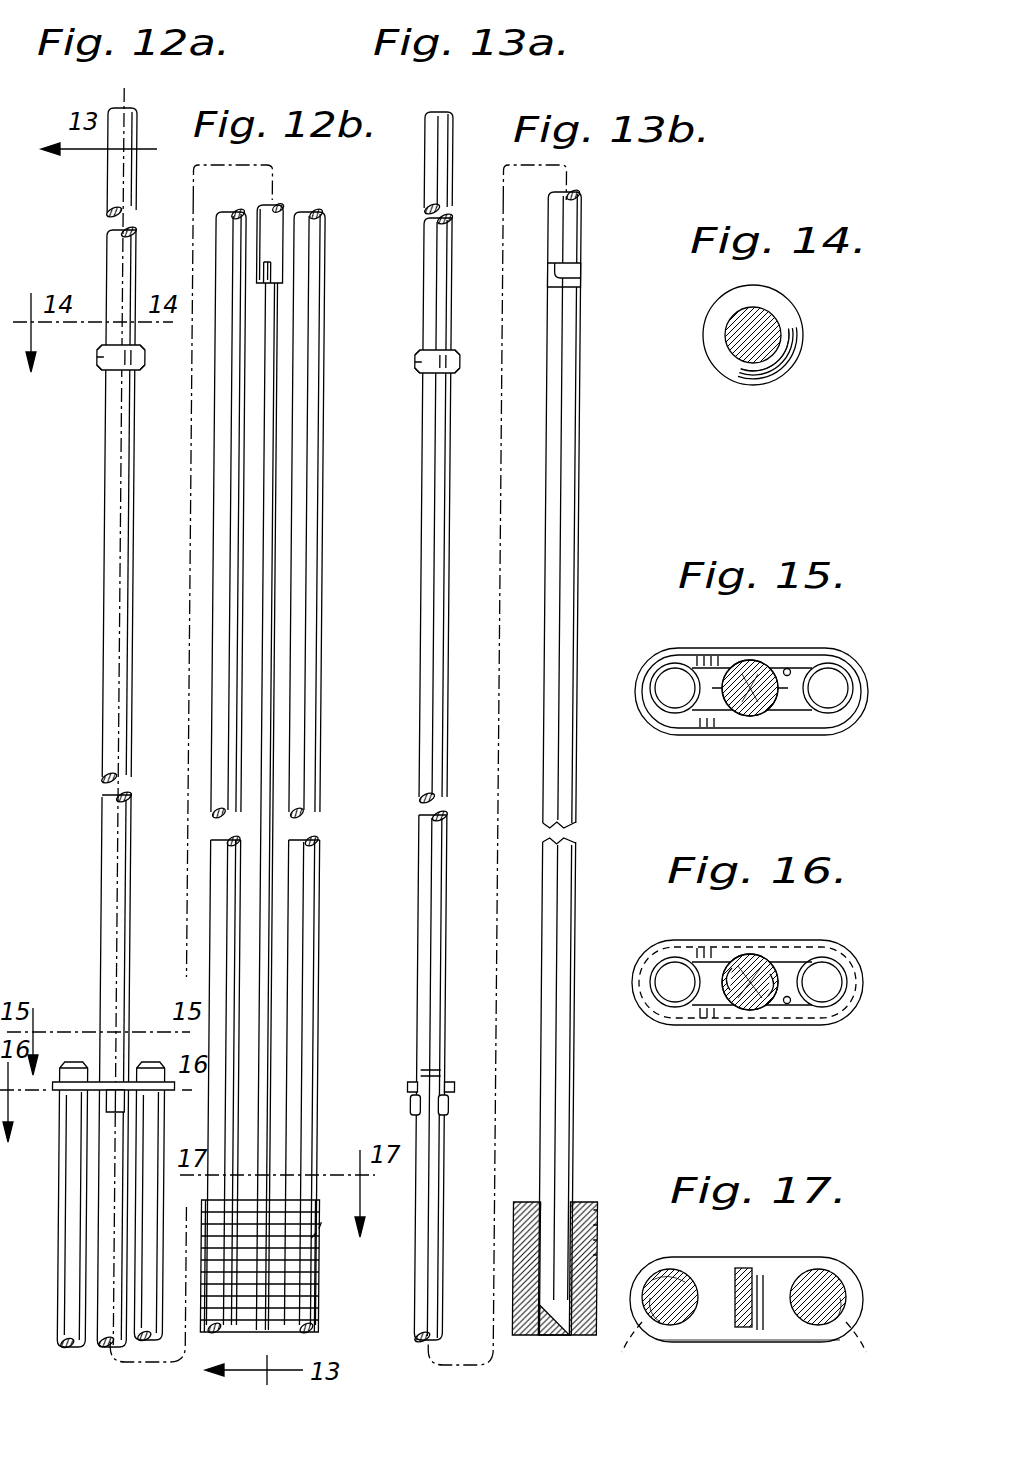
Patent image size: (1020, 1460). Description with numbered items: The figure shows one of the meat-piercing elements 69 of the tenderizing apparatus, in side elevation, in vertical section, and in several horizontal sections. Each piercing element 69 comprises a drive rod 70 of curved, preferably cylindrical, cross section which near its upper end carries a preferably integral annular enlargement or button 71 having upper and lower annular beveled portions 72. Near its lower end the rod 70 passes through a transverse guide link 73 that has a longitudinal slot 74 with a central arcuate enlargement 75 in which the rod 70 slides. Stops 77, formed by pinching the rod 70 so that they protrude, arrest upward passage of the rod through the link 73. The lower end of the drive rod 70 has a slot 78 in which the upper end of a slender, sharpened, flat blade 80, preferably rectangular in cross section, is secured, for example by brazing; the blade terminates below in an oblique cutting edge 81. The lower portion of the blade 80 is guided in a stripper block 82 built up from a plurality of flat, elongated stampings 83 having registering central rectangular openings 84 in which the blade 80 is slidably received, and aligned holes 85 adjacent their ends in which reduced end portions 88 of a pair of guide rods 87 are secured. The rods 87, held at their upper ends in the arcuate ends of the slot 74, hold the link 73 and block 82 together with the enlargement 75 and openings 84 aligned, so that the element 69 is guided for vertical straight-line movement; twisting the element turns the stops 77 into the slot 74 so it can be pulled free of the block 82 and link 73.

In FIG. 12A, the meat-piercing element 69 is at (86, 644).
In FIG. 12A, the drive rod 70 is at (108, 245).
In FIG. 12B, the drive rod 70 is at (279, 206).
In FIG. 13A, the drive rod 70 is at (428, 232).
In FIG. 13B, the drive rod 70 is at (580, 200).
In FIG. 14, the drive rod 70 is at (768, 340).
In FIG. 15, the drive rod 70 is at (748, 664).
In FIG. 16, the drive rod 70 is at (752, 1010).
In FIG. 12A, the annular enlargement or button 71 is at (101, 360).
In FIG. 13A, the annular enlargement or button 71 is at (419, 358).
In FIG. 14, the annular enlargement or button 71 is at (722, 303).
In FIG. 12A, the annular beveled portions 72 is at (141, 372).
In FIG. 13A, the annular beveled portions 72 is at (458, 374).
In FIG. 14, the annular beveled portions 72 is at (728, 365).
In FIG. 12A, the transverse guide link 73 is at (62, 1086).
In FIG. 13A, the transverse guide link 73 is at (410, 1086).
In FIG. 15, the transverse guide link 73 is at (674, 650).
In FIG. 16, the transverse guide link 73 is at (682, 942).
In FIG. 15, the longitudinal slot 74 is at (790, 668).
In FIG. 16, the longitudinal slot 74 is at (792, 1003).
In FIG. 13A, the central arcuate enlargement 75 is at (422, 1076).
In FIG. 15, the central arcuate enlargement 75 is at (780, 706).
In FIG. 12A, the stops 77 is at (112, 1102).
In FIG. 13A, the stops 77 is at (414, 1104).
In FIG. 15, the stops 77 is at (744, 712).
In FIG. 16, the stops 77 is at (716, 1000).
In FIG. 12B, the slot 78 is at (280, 272).
In FIG. 13B, the slot 78 is at (586, 271).
In FIG. 12B, the blade 80 is at (274, 380).
In FIG. 13B, the blade 80 is at (572, 514).
In FIG. 17, the blade 80 is at (761, 1330).
In FIG. 13B, the pointed tip 81 is at (552, 1333).
In FIG. 12B, the stripper block 82 is at (330, 1259).
In FIG. 13B, the stripper block 82 is at (518, 1345).
In FIG. 17, the stripper block 82 is at (830, 1258).
In FIG. 12B, the stampings 83 is at (322, 1300).
In FIG. 13B, the stampings 83 is at (598, 1255).
In FIG. 17, the stampings 83 is at (706, 1265).
In FIG. 13B, the central rectangular openings 84 is at (546, 1205).
In FIG. 17, the central rectangular openings 84 is at (738, 1325).
In FIG. 12B, the aligned holes 85 is at (219, 1330).
In FIG. 17, the aligned holes 85 is at (842, 1320).
In FIG. 12B, the guide rods 87 is at (214, 845).
In FIG. 15, the guide rods 87 is at (834, 702).
In FIG. 16, the guide rods 87 is at (830, 996).
In FIG. 17, the guide rods 87 is at (801, 1278).
In FIG. 12B, the reduced end portions 88 is at (324, 1238).
In FIG. 17, the reduced end portions 88 is at (640, 1322).